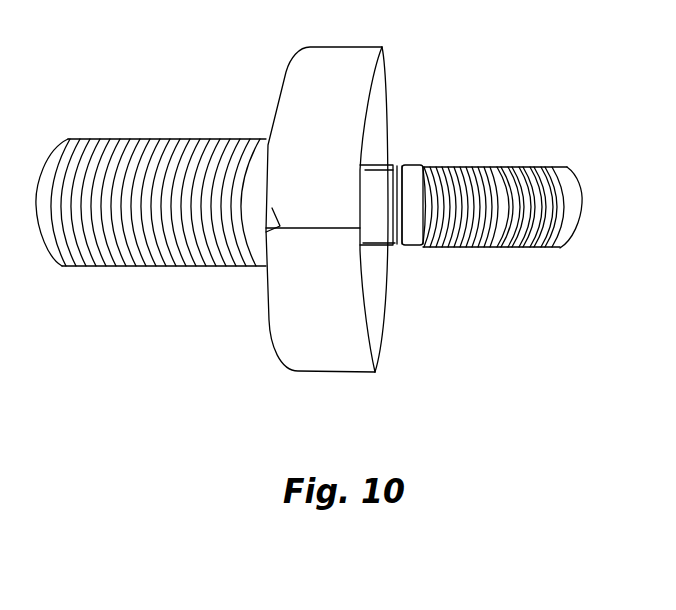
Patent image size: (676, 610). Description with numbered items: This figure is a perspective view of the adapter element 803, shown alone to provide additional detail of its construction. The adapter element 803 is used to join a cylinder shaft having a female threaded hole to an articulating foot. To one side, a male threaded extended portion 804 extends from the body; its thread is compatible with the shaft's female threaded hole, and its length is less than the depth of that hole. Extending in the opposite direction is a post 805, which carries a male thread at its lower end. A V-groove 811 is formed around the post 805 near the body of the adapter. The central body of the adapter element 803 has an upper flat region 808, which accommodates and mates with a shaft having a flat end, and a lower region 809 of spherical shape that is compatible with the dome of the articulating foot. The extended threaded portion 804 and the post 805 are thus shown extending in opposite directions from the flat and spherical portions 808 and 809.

The adapter element 803 is at (332, 63).
The male threaded extended portion 804 is at (130, 137).
The post 805 is at (516, 250).
The upper flat region 808 is at (278, 88).
The lower region 809 is at (375, 115).
The V-groove 811 is at (398, 163).